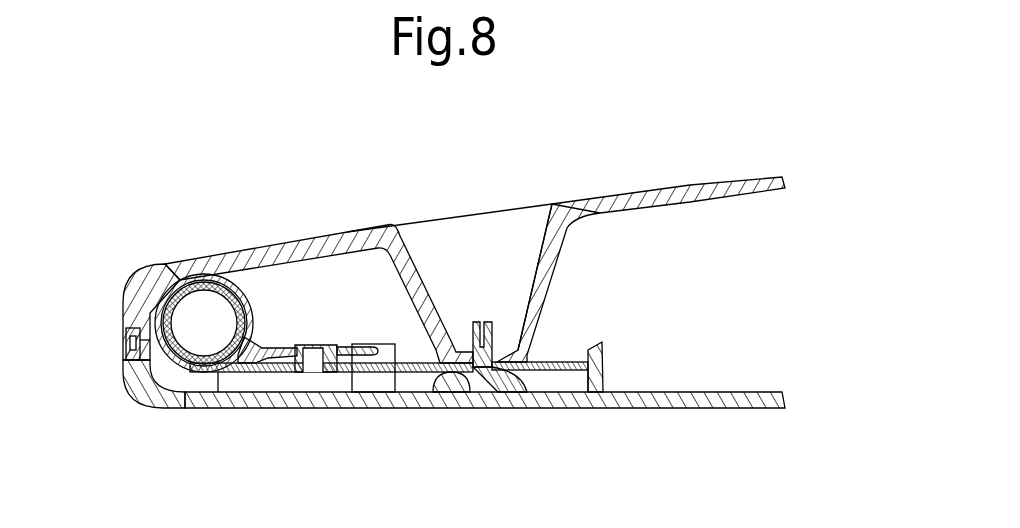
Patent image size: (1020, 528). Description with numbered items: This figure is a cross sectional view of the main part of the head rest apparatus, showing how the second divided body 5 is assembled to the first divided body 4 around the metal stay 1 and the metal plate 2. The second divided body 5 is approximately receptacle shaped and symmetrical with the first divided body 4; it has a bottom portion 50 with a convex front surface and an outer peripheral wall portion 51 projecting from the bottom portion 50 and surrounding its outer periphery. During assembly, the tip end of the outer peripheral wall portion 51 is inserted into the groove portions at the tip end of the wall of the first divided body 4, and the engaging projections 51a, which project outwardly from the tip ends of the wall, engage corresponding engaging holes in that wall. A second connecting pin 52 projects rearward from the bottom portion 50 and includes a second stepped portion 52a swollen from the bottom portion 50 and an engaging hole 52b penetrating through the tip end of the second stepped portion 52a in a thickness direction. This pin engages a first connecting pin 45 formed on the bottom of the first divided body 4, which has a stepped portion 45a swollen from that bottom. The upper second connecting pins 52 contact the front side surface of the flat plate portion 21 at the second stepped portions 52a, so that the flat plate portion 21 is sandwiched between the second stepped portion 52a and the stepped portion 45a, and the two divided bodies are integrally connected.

The metal stay 1 is at (181, 298).
The metal plate 2 is at (250, 300).
The first divided body 4 is at (303, 409).
The second divided body 5 is at (348, 232).
The flat plate portion 21 is at (548, 361).
The first connecting pin 45 is at (490, 322).
The stepped portion 45a is at (520, 385).
The bottom portion 50 is at (660, 187).
The outer peripheral wall portion 51 is at (123, 295).
The engaging projection 51a is at (117, 335).
The second connecting pin 52 is at (550, 270).
The second stepped portion 52a is at (455, 347).
The engaging hole 52b is at (448, 381).